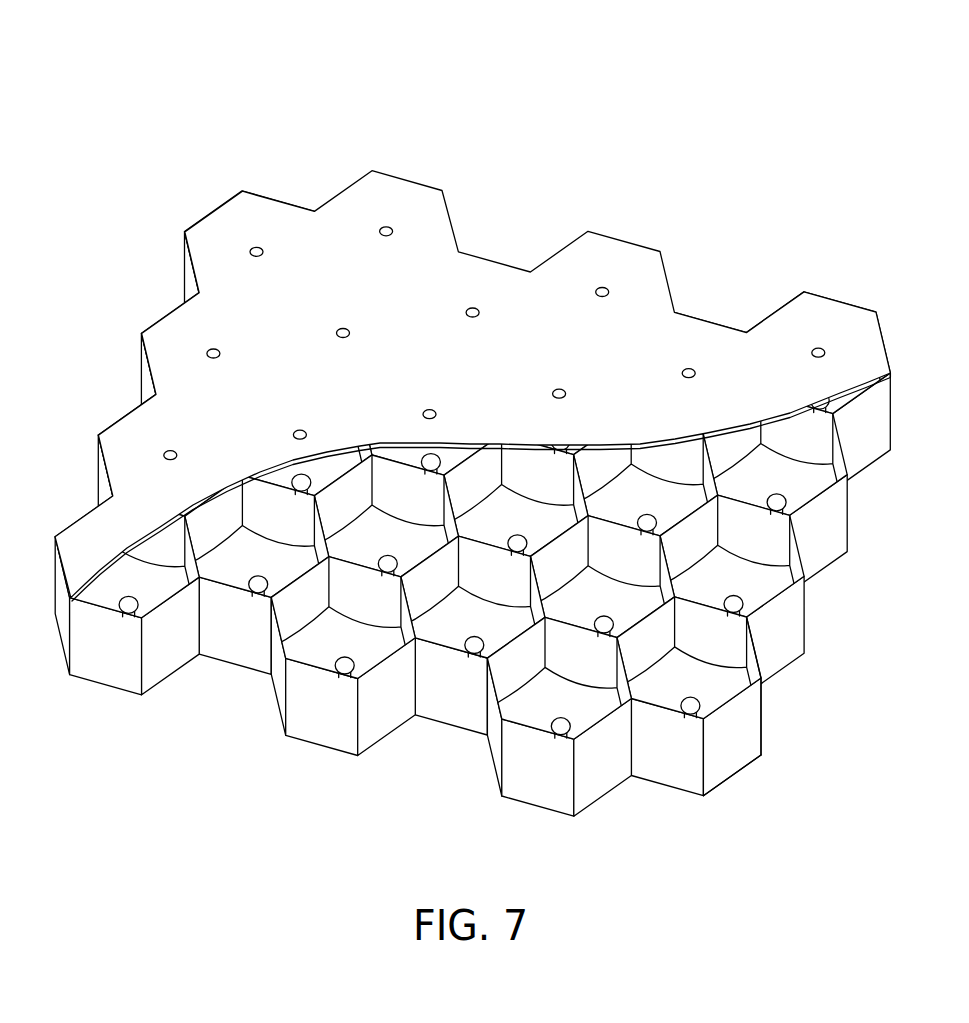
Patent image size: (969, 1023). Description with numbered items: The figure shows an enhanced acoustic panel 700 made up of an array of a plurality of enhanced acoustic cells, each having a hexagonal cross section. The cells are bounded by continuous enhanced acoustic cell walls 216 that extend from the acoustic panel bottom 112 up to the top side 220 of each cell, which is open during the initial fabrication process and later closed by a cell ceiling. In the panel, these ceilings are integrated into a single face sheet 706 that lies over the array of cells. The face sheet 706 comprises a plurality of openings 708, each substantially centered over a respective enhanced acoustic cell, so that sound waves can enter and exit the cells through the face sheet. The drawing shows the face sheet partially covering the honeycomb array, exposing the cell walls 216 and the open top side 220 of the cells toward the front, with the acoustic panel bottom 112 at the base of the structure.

The enhanced acoustic panel 700 is at (472, 434).
The face sheet 706 is at (828, 305).
The openings 708 is at (596, 293).
The enhanced acoustic cell walls 216 is at (764, 716).
The top side 220 is at (762, 680).
The acoustic panel bottom 112 is at (742, 771).